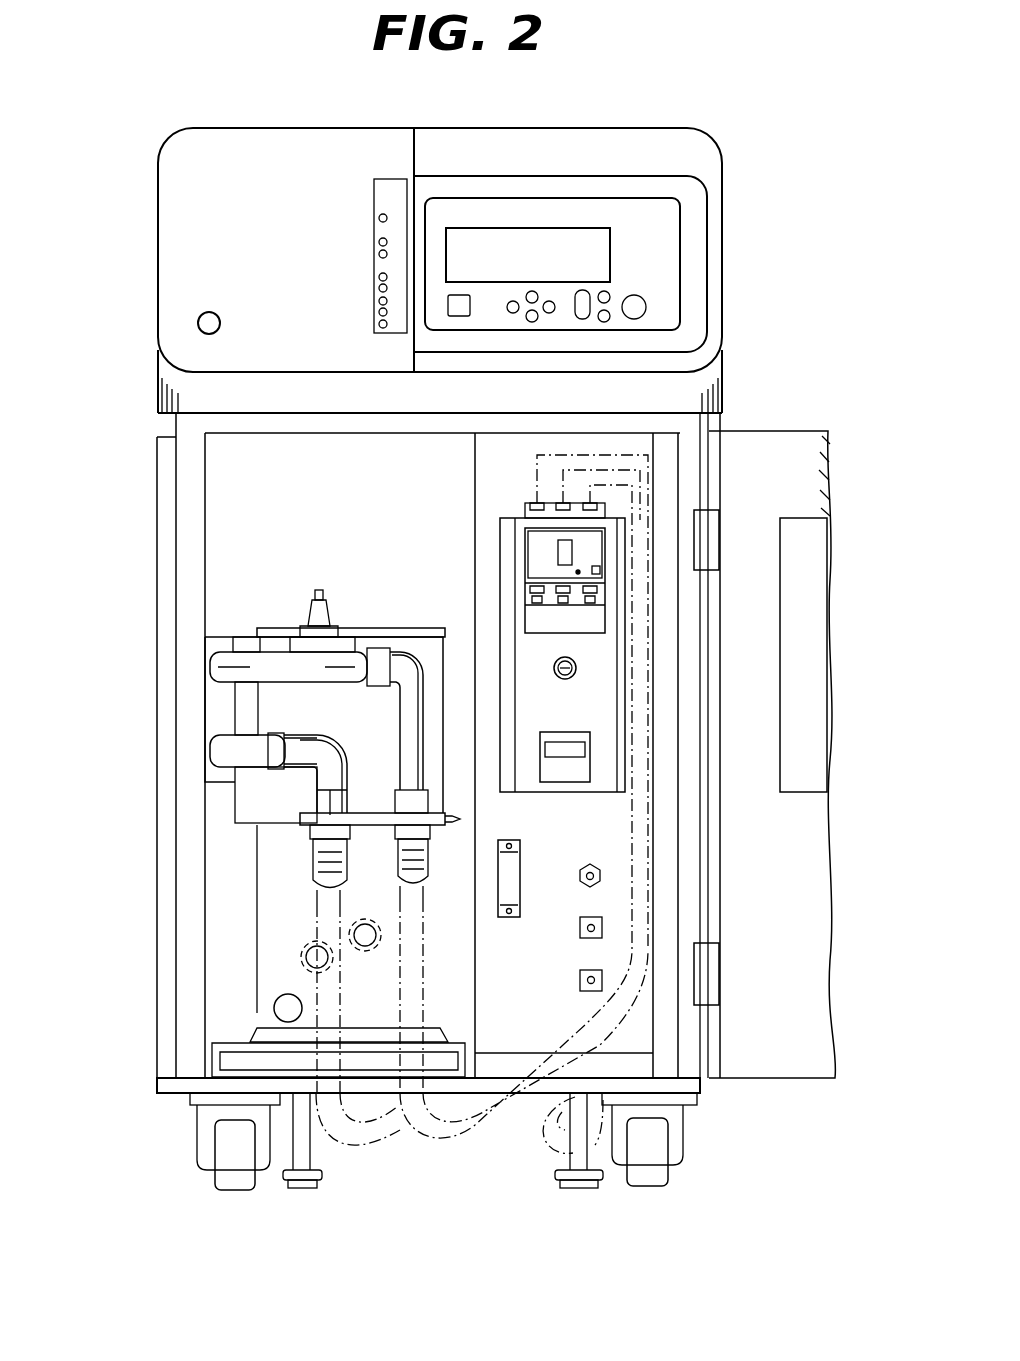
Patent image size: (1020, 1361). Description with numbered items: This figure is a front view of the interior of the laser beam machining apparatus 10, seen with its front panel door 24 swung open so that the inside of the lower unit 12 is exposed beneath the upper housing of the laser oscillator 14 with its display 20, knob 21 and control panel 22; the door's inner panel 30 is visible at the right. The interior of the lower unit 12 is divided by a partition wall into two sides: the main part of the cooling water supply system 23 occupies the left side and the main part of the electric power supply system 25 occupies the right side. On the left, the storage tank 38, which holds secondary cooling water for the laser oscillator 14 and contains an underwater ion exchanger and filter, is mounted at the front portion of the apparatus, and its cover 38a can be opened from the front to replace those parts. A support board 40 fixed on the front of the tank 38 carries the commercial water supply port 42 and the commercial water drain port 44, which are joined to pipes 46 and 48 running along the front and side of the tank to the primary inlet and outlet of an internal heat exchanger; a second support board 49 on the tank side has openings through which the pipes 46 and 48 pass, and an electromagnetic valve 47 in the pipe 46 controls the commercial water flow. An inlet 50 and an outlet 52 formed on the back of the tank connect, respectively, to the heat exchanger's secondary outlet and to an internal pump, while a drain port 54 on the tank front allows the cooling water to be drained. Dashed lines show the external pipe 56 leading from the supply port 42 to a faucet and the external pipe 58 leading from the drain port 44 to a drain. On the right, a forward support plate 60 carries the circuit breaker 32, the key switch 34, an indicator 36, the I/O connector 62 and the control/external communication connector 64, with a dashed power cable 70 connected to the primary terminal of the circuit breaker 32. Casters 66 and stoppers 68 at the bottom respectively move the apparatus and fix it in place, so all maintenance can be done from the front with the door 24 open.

The apparatus 10 is at (438, 239).
The lower unit 12 is at (165, 494).
The laser oscillator 14 is at (190, 192).
The display 20 is at (587, 243).
The knob 21 is at (200, 325).
The control panel 22 is at (600, 261).
The cooling water supply system 23 is at (348, 901).
The front panel door 24 is at (788, 724).
The electric power supply system 25 is at (699, 649).
The door inner panel 30 is at (783, 600).
The circuit breaker 32 is at (572, 546).
The key switch 34 is at (578, 668).
The indicator 36 is at (592, 760).
The storage tank 38 is at (329, 680).
The cover 38a is at (375, 628).
The support board 40 is at (298, 848).
The commercial water supply port 42 is at (397, 806).
The commercial water drain port 44 is at (315, 804).
The pipe 46 is at (386, 690).
The electromagnetic valve 47 is at (316, 630).
The pipe 48 is at (317, 745).
The support board 49 is at (218, 706).
The inlet 50 is at (350, 918).
The outlet 52 is at (300, 957).
The drain port 54 is at (275, 1013).
The external pipe 56 is at (437, 1162).
The external pipe 58 is at (355, 1165).
The forward support plate 60 is at (615, 468).
The I/O connector 62 is at (522, 860).
The control/external communication connector 64 is at (669, 927).
The casters 66 is at (655, 1156).
The stoppers 68 is at (565, 1160).
The power cable 70 is at (700, 565).